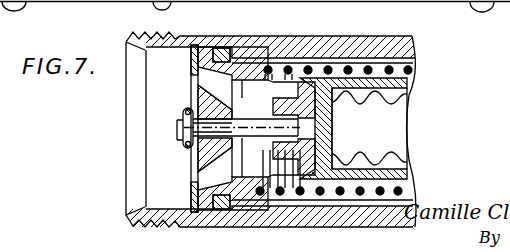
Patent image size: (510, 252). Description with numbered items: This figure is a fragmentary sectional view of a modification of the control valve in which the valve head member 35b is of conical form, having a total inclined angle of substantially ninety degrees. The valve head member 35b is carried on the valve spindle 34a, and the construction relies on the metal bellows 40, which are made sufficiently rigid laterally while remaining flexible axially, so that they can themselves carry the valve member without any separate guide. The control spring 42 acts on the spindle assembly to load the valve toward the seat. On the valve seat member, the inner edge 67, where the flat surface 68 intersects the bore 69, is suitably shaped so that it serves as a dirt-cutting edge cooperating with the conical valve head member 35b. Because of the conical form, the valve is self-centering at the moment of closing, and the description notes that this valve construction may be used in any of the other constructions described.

The valve spindle 34a is at (263, 132).
The valve head member 35b is at (205, 167).
The metal bellows 40 is at (410, 87).
The control spring 42 is at (289, 65).
The inner edge of the valve seat member 67 is at (200, 86).
The flat surface 68 is at (200, 190).
The bore 69 is at (191, 60).